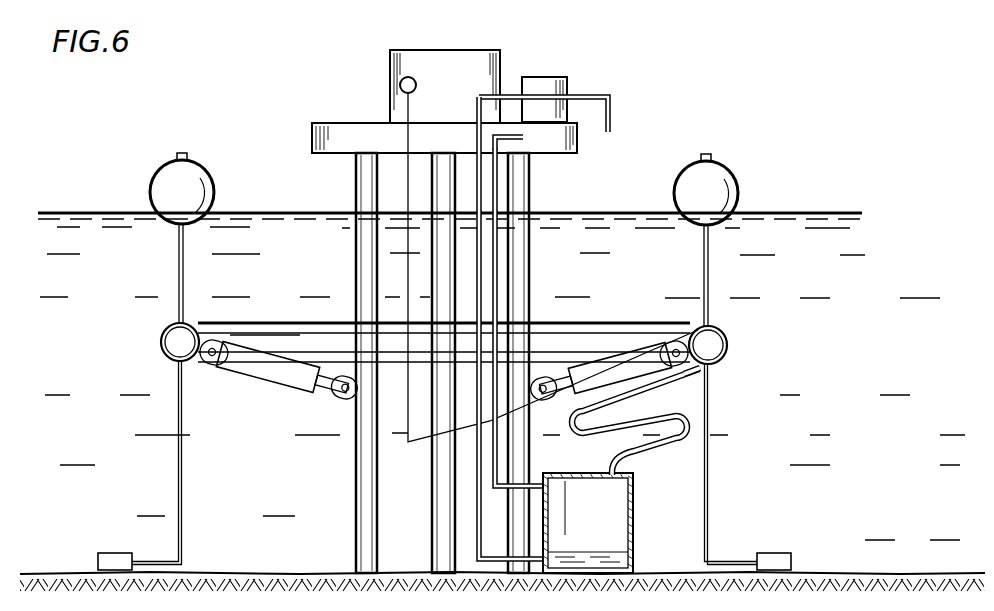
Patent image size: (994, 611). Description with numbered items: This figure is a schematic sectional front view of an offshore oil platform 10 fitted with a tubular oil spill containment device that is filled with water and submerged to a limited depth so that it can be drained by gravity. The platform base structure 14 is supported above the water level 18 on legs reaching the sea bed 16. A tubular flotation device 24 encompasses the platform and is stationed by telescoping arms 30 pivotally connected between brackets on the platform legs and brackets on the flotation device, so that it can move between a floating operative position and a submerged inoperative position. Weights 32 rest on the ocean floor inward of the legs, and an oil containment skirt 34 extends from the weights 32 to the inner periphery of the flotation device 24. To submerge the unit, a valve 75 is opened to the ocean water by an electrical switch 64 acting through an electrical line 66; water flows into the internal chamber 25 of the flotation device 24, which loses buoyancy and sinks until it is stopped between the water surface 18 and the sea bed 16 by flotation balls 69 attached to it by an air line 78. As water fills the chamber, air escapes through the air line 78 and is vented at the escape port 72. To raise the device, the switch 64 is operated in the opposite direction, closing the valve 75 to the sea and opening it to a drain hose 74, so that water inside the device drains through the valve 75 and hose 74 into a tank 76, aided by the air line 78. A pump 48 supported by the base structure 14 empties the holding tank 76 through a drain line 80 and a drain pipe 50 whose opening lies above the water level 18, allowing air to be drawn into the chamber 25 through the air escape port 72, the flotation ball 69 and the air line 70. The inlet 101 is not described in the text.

The offshore oil platform 10 is at (407, 47).
The platform base structure 14 is at (312, 132).
The sea bed 16 is at (667, 573).
The water level 18 is at (827, 212).
The tubular flotation device 24 is at (170, 357).
The internal chamber 25 is at (172, 338).
The telescoping arm 30 is at (270, 368).
The weight 32 is at (110, 552).
The oil containment skirt 34 is at (182, 463).
The pump 48 is at (557, 76).
The drain pipe 50 is at (611, 100).
The electrical switch 64 is at (401, 82).
The electrical line 66 is at (407, 133).
The flotation ball 69 is at (150, 184).
The air line 70 is at (177, 262).
The air escape port 72 is at (178, 153).
The drain hose 74 is at (670, 451).
The valve 75 is at (704, 373).
The tank 76 is at (633, 525).
The air line 78 is at (498, 250).
The drain line 80 is at (482, 283).
The inlet 101 is at (516, 142).